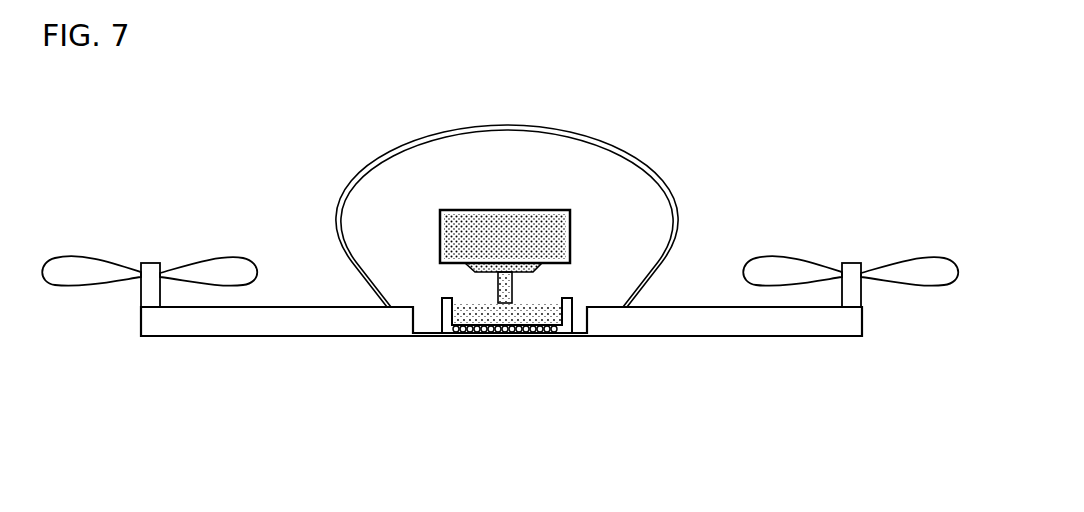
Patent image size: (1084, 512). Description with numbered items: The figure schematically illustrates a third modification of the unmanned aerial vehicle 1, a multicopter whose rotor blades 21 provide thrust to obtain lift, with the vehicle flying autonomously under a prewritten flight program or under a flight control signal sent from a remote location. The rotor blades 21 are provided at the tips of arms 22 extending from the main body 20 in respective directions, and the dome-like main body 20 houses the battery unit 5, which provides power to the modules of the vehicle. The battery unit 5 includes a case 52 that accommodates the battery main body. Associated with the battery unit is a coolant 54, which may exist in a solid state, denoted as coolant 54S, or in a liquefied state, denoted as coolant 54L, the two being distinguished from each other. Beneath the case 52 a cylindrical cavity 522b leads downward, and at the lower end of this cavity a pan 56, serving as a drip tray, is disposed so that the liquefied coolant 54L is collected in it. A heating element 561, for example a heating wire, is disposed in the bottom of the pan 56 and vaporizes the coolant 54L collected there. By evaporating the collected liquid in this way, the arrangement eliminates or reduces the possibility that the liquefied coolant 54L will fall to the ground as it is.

The unmanned aerial vehicle 1 is at (315, 103).
The battery unit 5 is at (468, 190).
The main body 20 is at (350, 187).
The rotor blades 21 is at (98, 267).
The arms 22 is at (240, 325).
The case 52 is at (571, 222).
The coolant 54 is at (613, 209).
The coolant in solid state 54S is at (520, 222).
The liquefied coolant 54L is at (538, 307).
The cylindrical cavity 522b is at (497, 291).
The pan 56 is at (442, 317).
The heating element 561 is at (523, 337).